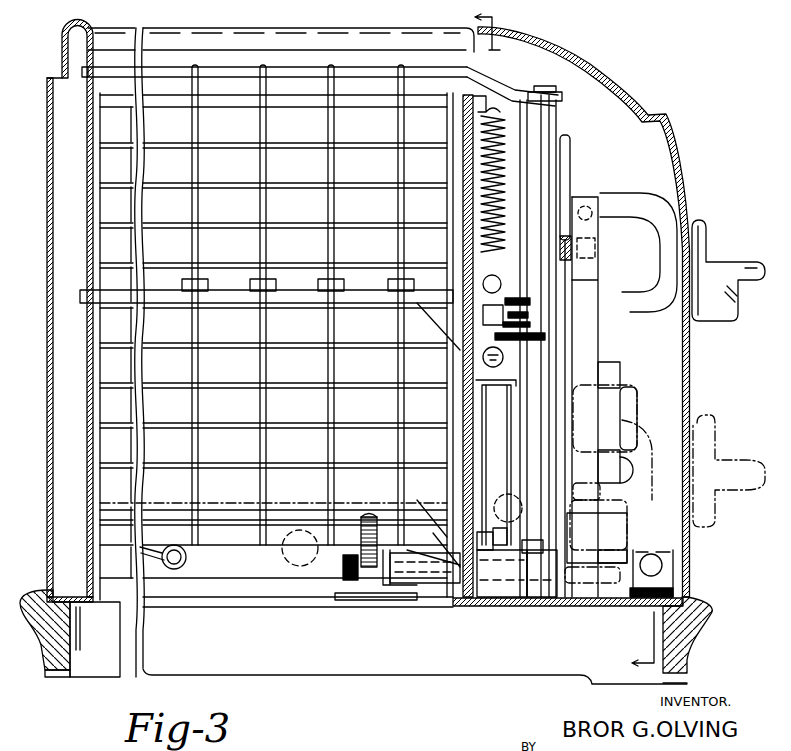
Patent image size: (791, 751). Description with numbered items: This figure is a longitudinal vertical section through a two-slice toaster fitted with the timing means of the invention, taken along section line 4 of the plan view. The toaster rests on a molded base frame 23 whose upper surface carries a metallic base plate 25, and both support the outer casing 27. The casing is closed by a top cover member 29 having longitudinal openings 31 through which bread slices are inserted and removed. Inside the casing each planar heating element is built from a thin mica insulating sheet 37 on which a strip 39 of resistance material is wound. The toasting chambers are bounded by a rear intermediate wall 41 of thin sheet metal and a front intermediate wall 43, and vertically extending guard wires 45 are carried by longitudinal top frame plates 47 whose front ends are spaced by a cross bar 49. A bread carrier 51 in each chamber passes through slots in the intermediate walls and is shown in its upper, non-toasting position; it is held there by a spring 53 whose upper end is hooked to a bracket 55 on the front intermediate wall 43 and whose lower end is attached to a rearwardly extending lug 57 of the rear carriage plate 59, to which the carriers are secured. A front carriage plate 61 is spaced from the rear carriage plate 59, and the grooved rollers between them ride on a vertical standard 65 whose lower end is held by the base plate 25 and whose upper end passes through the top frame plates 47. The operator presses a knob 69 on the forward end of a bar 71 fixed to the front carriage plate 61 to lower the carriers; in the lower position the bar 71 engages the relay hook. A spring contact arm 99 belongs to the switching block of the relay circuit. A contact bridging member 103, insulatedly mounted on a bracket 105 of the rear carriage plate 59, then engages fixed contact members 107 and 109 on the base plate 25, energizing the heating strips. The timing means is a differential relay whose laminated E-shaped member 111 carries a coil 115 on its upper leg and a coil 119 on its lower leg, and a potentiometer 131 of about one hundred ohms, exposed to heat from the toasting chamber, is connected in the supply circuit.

The section line 4- 4 is at (554, 340).
The base frame 23 is at (43, 657).
The base plate 25 is at (95, 639).
The outer casing 27 is at (47, 425).
The top cover member 29 is at (62, 33).
The longitudinal openings 31 is at (265, 28).
The electric-insulating sheet 37 is at (279, 168).
The resistance strip 39 is at (359, 144).
The rear intermediate wall 41 is at (88, 347).
The front intermediate wall 43 is at (460, 197).
The guard wires 45 is at (390, 205).
The top frame plates 47 is at (487, 81).
The cross bar 49 is at (552, 100).
The bread carrier 51 is at (358, 292).
The spring 53 is at (477, 160).
The bracket 55 is at (480, 125).
The rearwardly extending lug 57 is at (500, 428).
The rear carriage plate 59 is at (512, 128).
The front carriage plate 61 is at (565, 182).
The vertical standard 65 is at (563, 182).
The knob 69 is at (707, 247).
The bar 71 is at (651, 242).
The spring contact arm 99 is at (598, 270).
The contact bridging member 103 is at (548, 338).
The bracket 105 is at (520, 306).
The fixed contact member 107 is at (500, 545).
The fixed contact member 109 is at (523, 600).
The E-shaped relay member 111 is at (618, 370).
The coil 115 is at (632, 387).
The coil 119 is at (633, 515).
The potentiometer 131 is at (375, 568).